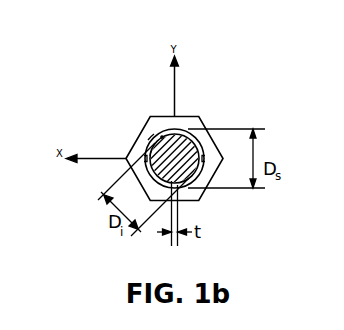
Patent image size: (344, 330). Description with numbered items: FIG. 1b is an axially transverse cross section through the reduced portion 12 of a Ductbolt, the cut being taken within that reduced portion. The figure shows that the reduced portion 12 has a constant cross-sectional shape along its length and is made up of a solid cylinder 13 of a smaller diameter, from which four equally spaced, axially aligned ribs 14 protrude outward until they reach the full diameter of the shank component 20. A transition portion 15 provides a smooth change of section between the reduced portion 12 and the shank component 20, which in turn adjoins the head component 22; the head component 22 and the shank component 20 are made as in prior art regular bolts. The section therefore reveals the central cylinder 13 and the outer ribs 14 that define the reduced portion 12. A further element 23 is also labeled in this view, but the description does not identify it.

The reduced portion 12 is at (172, 144).
The solid cylinder 13 is at (189, 139).
The ribs 14 is at (198, 153).
The transition portion 15 is at (143, 133).
The shank component 20 is at (140, 145).
The head component 22 is at (135, 160).
The slot 23 is at (154, 129).